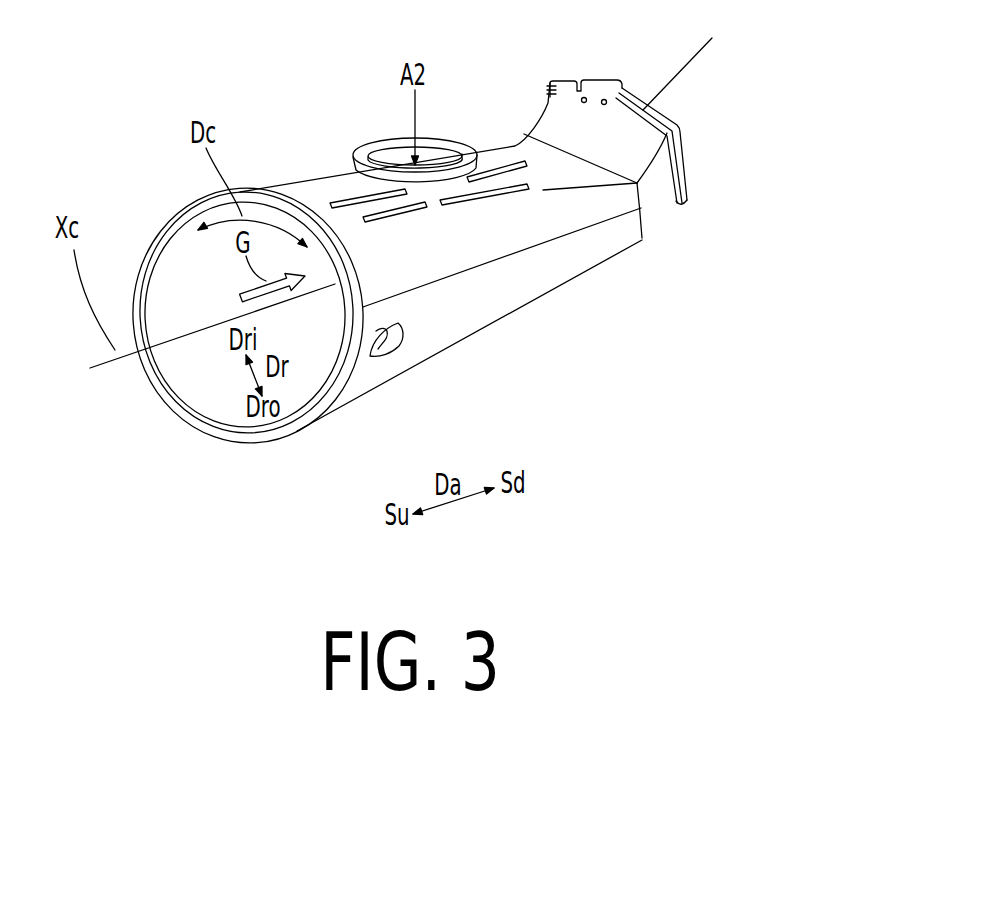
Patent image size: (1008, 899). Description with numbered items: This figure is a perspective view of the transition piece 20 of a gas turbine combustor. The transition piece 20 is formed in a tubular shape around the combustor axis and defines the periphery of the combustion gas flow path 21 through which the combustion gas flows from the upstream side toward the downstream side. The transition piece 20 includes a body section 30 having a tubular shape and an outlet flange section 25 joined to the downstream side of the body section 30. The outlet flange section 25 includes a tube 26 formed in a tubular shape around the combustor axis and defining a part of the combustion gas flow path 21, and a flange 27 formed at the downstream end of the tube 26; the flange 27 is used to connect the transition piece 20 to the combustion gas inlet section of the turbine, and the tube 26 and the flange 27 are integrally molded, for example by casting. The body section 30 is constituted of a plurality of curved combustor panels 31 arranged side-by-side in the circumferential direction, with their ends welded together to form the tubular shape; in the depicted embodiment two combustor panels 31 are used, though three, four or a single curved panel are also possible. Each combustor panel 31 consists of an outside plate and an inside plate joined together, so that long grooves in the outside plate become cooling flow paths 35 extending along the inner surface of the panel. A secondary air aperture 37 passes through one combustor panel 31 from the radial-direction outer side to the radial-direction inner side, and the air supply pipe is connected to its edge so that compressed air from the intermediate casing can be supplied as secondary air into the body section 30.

The transition piece 20 is at (291, 165).
The combustion gas flow path 21 is at (320, 345).
The outlet flange section 25 is at (684, 220).
The tube 26 is at (652, 208).
The flange 27 is at (688, 186).
The body section 30 is at (514, 318).
The combustor panel 31 is at (333, 190).
The cooling flow path 35 is at (495, 147).
The secondary air aperture 37 is at (431, 142).